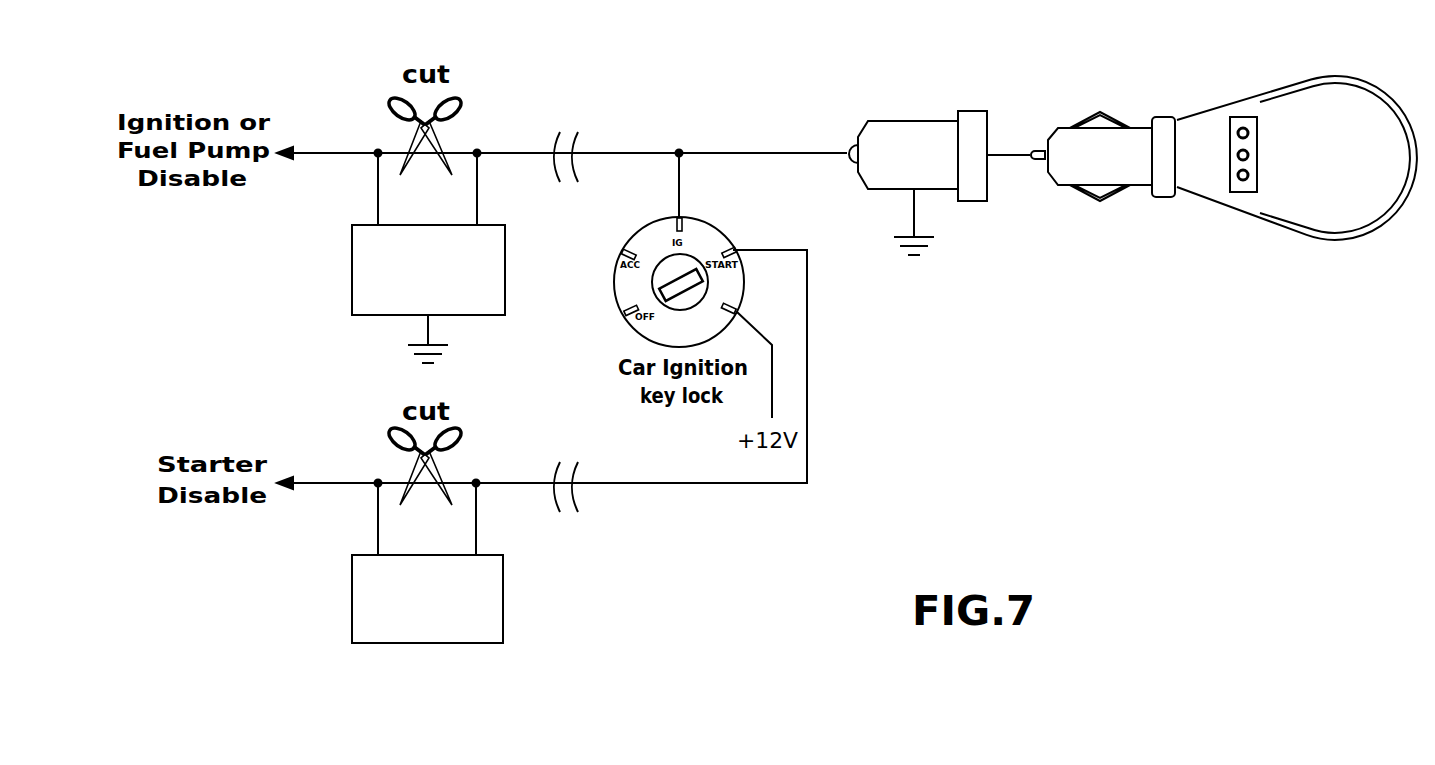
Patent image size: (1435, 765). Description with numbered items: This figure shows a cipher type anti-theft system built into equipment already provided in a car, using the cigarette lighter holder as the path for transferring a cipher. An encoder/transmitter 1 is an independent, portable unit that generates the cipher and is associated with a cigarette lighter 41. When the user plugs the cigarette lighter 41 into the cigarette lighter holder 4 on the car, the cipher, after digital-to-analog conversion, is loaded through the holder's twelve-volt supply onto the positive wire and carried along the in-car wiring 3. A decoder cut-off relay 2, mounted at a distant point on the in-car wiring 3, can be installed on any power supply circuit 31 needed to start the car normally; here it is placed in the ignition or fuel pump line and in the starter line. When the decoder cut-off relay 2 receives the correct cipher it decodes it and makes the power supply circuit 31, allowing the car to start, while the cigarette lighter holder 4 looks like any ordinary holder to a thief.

The encoder/transmitter 1 is at (1350, 88).
The decoder cut-off relay 2 is at (482, 297).
The in-car wiring 3 is at (783, 153).
The power supply circuit 31 is at (615, 153).
The cigarette lighter holder 4 is at (974, 190).
The cigarette lighter 41 is at (1135, 170).